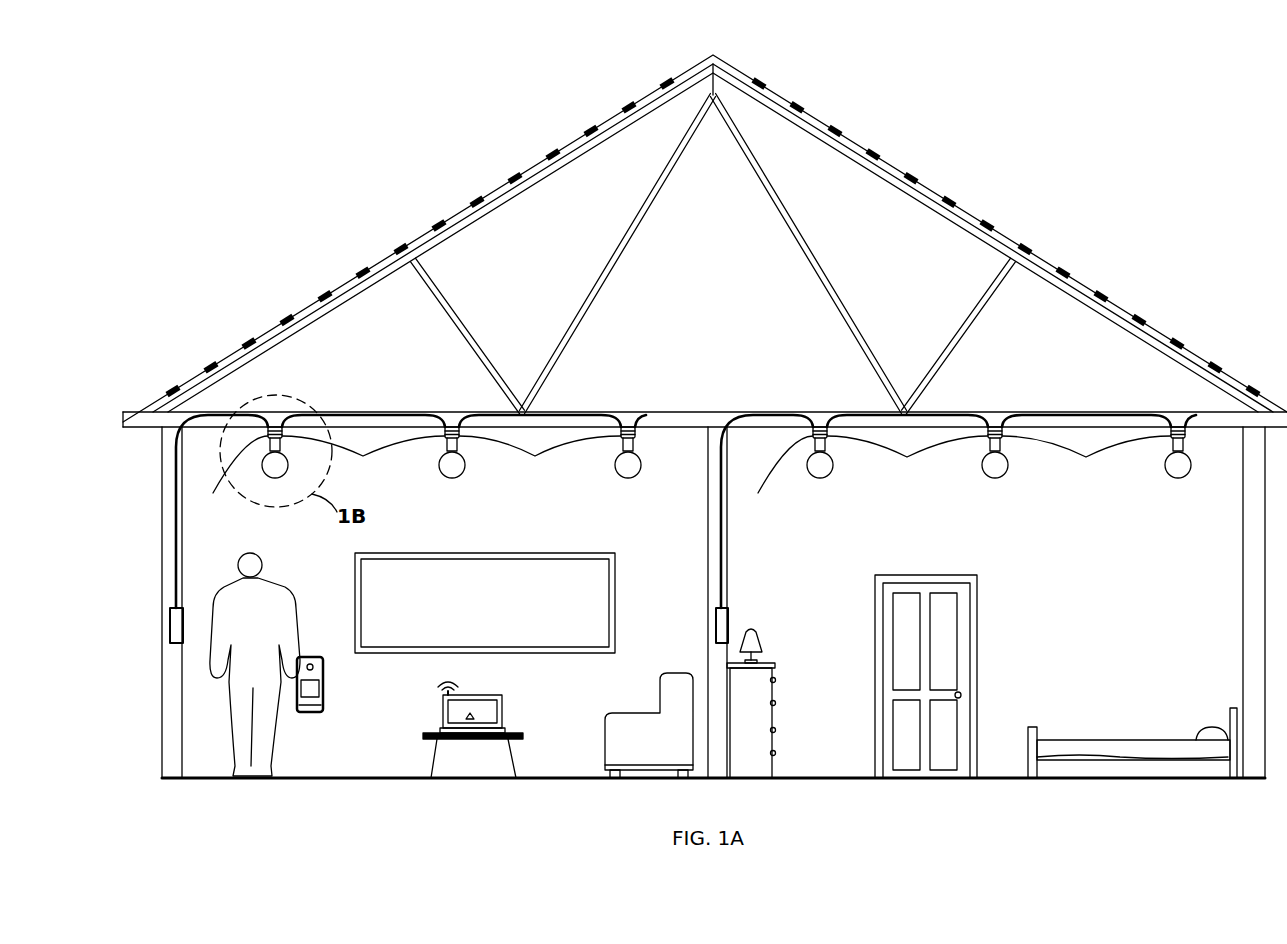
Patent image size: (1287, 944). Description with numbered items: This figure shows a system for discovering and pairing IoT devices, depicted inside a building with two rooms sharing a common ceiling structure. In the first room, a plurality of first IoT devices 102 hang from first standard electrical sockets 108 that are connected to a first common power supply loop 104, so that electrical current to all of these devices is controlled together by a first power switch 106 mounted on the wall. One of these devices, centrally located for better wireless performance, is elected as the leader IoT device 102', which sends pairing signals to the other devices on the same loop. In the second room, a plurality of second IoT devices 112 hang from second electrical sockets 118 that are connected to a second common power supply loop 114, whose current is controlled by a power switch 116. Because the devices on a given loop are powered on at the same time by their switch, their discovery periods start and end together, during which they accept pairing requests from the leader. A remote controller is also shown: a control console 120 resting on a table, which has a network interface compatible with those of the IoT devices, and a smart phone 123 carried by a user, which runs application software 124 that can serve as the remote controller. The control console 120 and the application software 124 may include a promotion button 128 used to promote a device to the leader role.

The first IoT device 102 is at (363, 456).
The leader IoT device 102' is at (655, 473).
The first common power supply loop 104 is at (376, 413).
The first power switch 106 is at (170, 620).
The first electrical socket 108 is at (407, 476).
The second IoT device 112 is at (833, 460).
The second common power supply loop 114 is at (1080, 413).
The power switch 116 is at (728, 618).
The second electrical socket 118 is at (954, 476).
The control console 120 is at (500, 706).
The smart phone 123 is at (312, 712).
The application software 124 is at (325, 686).
The promotion button 128 is at (306, 657).